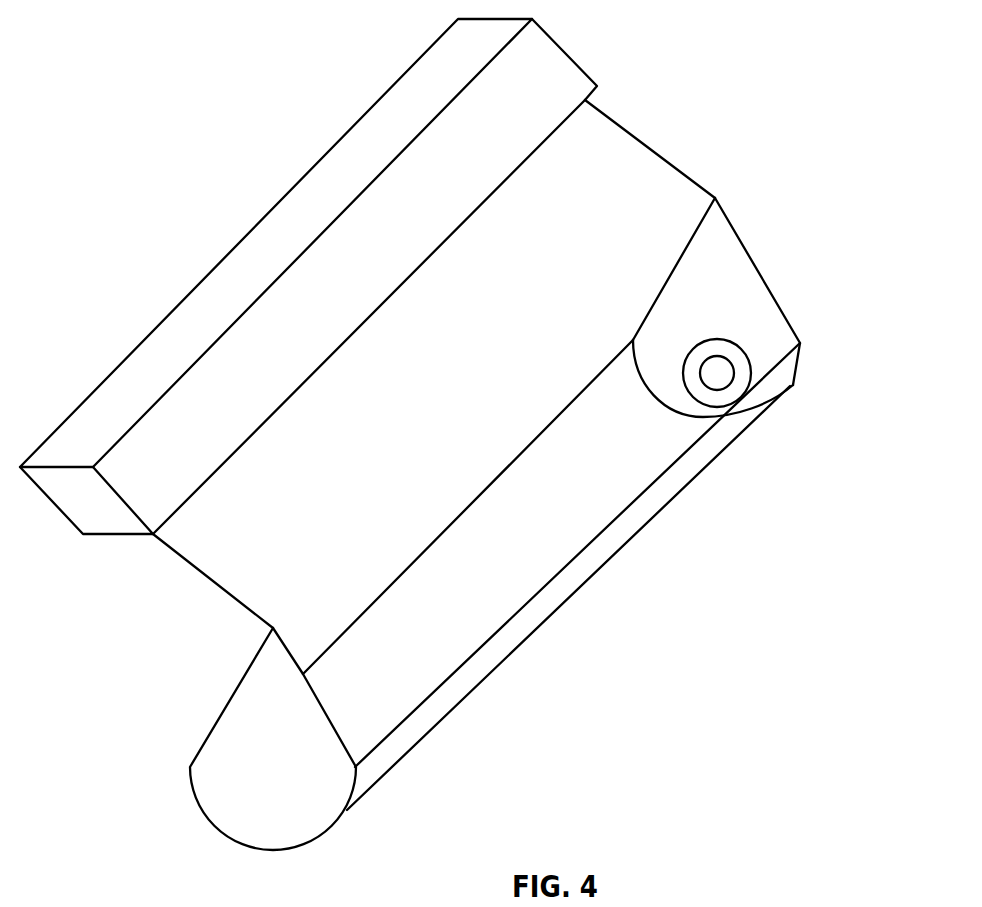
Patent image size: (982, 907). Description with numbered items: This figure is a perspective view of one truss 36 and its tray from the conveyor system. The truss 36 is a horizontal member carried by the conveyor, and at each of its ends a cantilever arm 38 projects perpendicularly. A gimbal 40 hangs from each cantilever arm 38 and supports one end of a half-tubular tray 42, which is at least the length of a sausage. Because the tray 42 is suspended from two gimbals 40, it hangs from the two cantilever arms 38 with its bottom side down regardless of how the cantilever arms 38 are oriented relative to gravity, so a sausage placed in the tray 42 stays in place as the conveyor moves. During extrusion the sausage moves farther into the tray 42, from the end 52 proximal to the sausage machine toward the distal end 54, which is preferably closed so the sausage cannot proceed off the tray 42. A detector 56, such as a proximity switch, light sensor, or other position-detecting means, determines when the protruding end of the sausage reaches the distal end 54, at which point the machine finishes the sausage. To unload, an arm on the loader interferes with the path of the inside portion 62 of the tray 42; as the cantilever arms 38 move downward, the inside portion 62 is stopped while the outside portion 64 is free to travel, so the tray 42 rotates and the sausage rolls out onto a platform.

The truss 36 is at (257, 245).
The cantilever arm 38 is at (208, 578).
The gimbal 40 is at (740, 235).
The half-tubular tray 42 is at (472, 522).
The end of tray proximal to machine 52 is at (362, 783).
The distal end 54 is at (783, 368).
The detector 56 is at (717, 372).
The inside portion 62 is at (207, 827).
The outside portion 64 is at (542, 598).